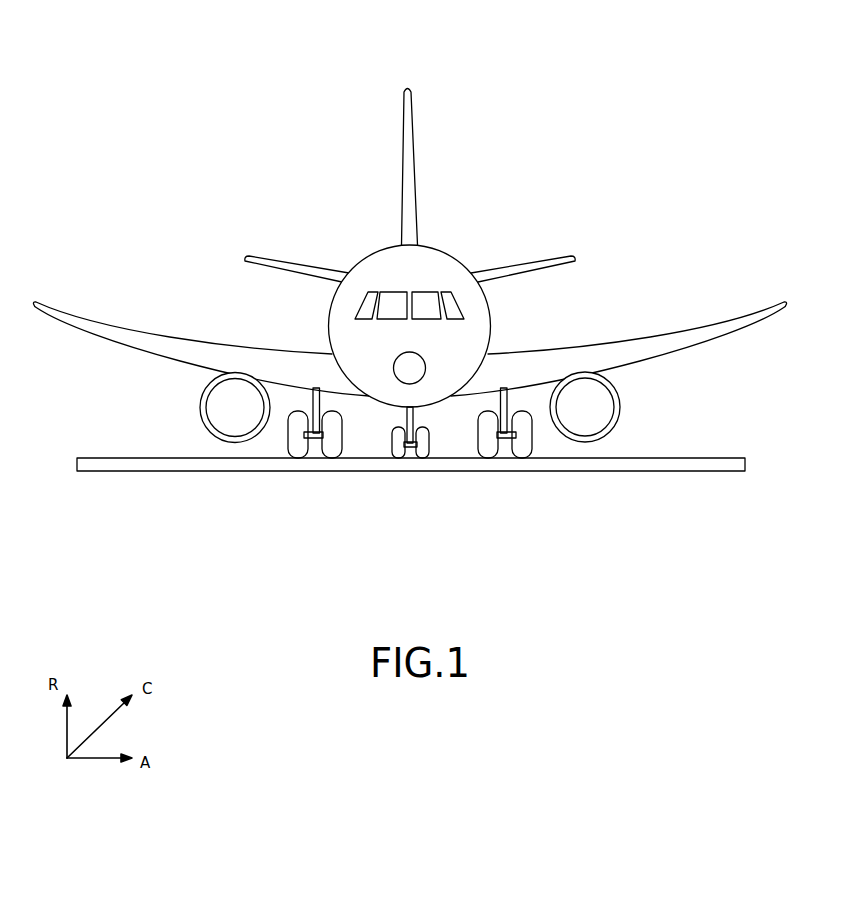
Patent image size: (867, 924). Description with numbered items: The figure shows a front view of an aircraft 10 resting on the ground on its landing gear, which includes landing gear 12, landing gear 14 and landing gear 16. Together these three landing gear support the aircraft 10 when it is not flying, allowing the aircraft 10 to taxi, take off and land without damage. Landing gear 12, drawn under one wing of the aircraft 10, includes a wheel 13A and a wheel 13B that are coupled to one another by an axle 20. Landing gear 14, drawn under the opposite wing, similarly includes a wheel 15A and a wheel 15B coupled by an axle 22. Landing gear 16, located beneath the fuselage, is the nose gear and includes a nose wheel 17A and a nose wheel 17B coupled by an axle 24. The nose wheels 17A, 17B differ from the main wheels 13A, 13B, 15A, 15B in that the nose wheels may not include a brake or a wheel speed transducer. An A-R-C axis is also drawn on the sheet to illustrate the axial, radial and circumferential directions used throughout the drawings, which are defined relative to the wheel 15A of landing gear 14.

The aircraft 10 is at (265, 168).
The landing gear 12 is at (553, 450).
The wheel 13A is at (532, 448).
The wheel 13B is at (492, 414).
The landing gear 14 is at (265, 447).
The wheel 15A is at (287, 449).
The wheel 15B is at (347, 449).
The landing gear 16 is at (437, 424).
The nose wheel 17A is at (428, 450).
The nose wheel 17B is at (393, 456).
The axle 20 is at (503, 439).
The axle 22 is at (315, 441).
The axle 24 is at (408, 451).